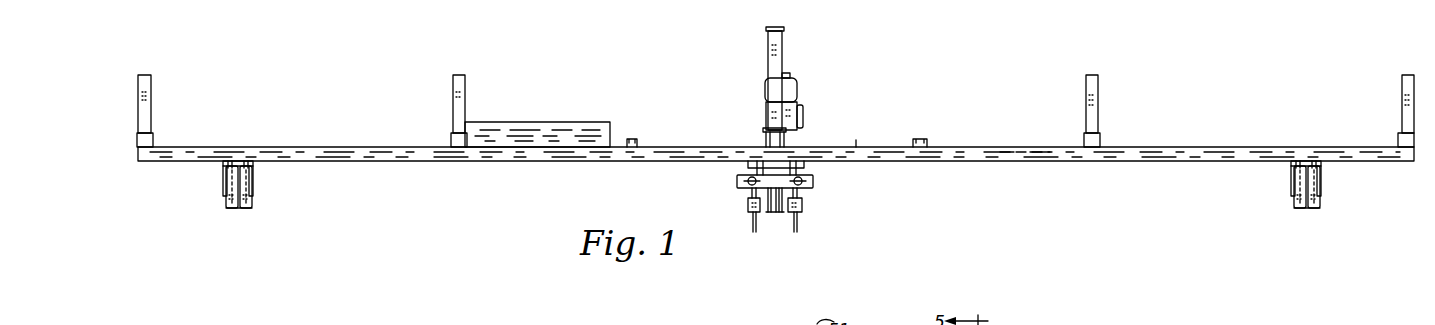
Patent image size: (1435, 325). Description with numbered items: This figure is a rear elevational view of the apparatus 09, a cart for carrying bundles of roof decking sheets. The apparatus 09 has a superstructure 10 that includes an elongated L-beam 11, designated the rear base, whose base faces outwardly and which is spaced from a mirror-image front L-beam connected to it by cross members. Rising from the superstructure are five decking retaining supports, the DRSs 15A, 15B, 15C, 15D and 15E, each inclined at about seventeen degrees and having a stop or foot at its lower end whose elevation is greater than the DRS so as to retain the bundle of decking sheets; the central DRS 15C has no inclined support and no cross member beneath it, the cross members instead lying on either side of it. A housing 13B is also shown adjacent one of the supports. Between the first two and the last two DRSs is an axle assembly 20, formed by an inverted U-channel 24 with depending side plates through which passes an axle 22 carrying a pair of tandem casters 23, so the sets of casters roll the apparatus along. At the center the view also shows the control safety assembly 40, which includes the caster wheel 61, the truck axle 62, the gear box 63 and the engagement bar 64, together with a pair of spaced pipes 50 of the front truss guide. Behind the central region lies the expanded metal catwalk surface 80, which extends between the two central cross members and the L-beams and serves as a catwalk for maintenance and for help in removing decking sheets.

The superstructure 10 is at (344, 102).
The elongated L-beam 11 is at (493, 160).
The housing 13B is at (452, 140).
The DRS 15A is at (151, 106).
The DRS 15B is at (453, 103).
The DRS 15C is at (768, 100).
The DRS 15D is at (1086, 115).
The DRS 15E is at (1402, 112).
The axle assembly 20 is at (764, 210).
The axle 22 is at (253, 192).
The tandem casters 23 is at (252, 208).
The inverted U-channel 24 is at (223, 175).
The control safety assembly 40 is at (772, 216).
The spaced pipes 50 is at (797, 165).
The caster wheel 61 is at (768, 214).
The truck axle 62 is at (777, 214).
The gear box 63 is at (798, 236).
The engagement bar 64 is at (760, 160).
The catwalk surface 80 is at (856, 147).
The apparatus 09 is at (1032, 224).